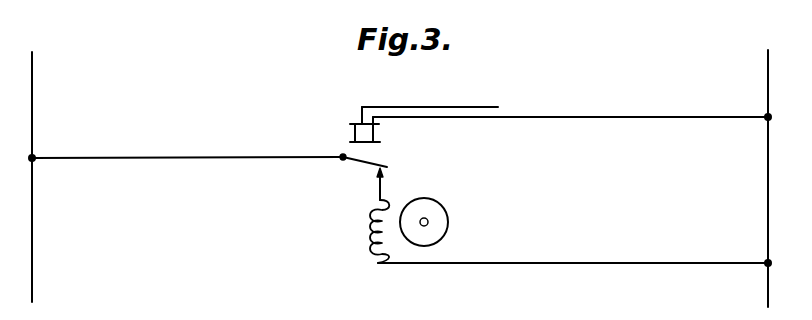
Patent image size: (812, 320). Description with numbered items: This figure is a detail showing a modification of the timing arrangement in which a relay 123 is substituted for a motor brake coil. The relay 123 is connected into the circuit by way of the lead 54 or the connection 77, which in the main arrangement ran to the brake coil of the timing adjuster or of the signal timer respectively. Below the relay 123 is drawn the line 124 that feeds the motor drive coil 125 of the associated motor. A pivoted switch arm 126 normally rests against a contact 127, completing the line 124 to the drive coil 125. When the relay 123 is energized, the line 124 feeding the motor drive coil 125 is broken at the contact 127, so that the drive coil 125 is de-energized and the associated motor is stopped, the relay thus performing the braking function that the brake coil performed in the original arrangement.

The lead 54 is at (388, 107).
The connection 77 is at (570, 101).
The relay 123 is at (380, 133).
The line 124 is at (140, 158).
The motor drive coil 125 is at (374, 229).
The switch arm 126 is at (366, 168).
The contact 127 is at (383, 175).